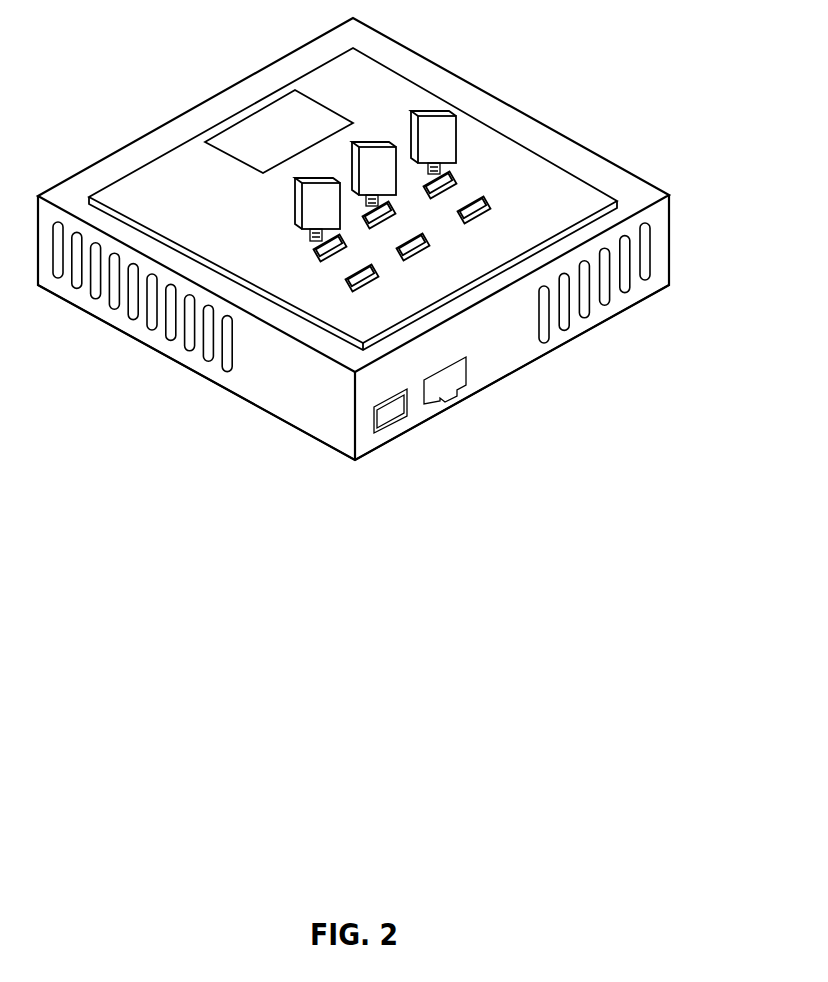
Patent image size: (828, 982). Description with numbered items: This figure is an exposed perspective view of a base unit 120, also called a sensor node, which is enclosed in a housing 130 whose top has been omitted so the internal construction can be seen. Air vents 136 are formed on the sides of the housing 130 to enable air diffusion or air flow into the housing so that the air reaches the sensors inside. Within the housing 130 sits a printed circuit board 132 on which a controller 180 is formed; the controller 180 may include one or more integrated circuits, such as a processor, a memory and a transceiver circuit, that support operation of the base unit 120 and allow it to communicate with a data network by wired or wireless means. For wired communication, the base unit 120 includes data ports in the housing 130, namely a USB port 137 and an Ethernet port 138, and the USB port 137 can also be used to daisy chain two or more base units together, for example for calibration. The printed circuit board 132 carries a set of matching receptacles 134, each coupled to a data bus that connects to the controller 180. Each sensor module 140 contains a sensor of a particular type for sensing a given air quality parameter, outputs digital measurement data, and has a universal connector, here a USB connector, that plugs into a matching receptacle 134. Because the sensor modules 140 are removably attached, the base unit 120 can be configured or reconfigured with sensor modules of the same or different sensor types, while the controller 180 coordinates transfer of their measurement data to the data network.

The base unit 120 is at (411, 45).
The housing 130 is at (523, 354).
The printed circuit board 132 is at (579, 210).
The matching receptacle 134 is at (426, 244).
The air vents 136 is at (650, 260).
The USB port 137 is at (386, 427).
The Ethernet port 138 is at (446, 402).
The sensor module 140 is at (295, 208).
The controller 180 is at (235, 162).